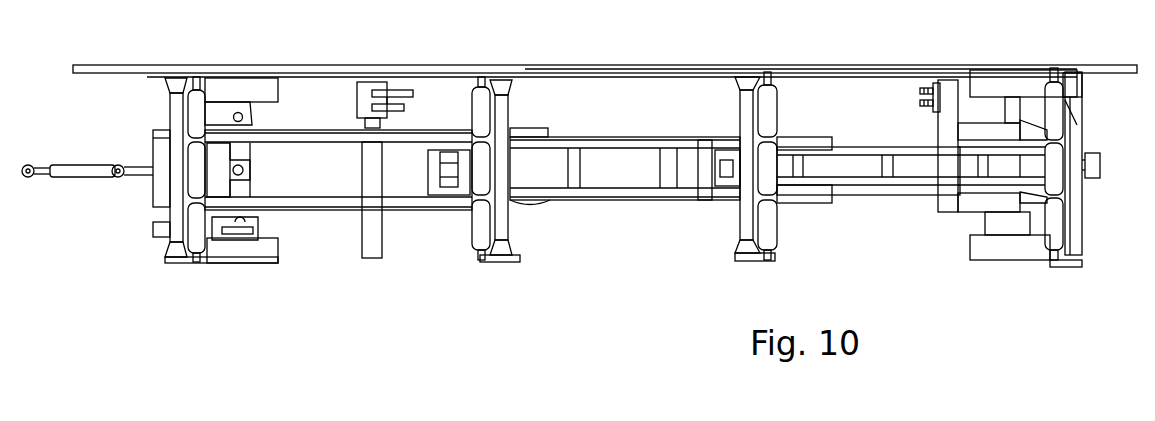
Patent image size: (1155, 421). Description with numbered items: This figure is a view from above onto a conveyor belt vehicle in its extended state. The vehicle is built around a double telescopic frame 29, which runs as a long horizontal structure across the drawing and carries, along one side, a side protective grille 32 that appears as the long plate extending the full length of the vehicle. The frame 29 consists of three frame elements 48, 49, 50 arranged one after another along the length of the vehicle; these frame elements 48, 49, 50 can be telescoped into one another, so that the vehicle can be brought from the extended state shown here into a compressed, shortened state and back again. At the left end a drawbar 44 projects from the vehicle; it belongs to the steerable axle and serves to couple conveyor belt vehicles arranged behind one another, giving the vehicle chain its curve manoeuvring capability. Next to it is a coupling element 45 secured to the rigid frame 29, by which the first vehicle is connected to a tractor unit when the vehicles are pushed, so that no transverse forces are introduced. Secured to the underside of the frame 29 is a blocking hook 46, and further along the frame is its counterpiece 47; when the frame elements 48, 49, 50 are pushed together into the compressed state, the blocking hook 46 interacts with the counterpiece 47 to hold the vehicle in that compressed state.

The double telescopic frame 29 is at (568, 200).
The side protective grille 32 is at (600, 77).
The drawbar 44 is at (30, 164).
The coupling element 45 is at (117, 163).
The blocking hook 46 is at (404, 90).
The counterpiece 47 is at (922, 84).
The frame element 48 is at (302, 203).
The frame element 49 is at (670, 172).
The frame element 50 is at (865, 183).